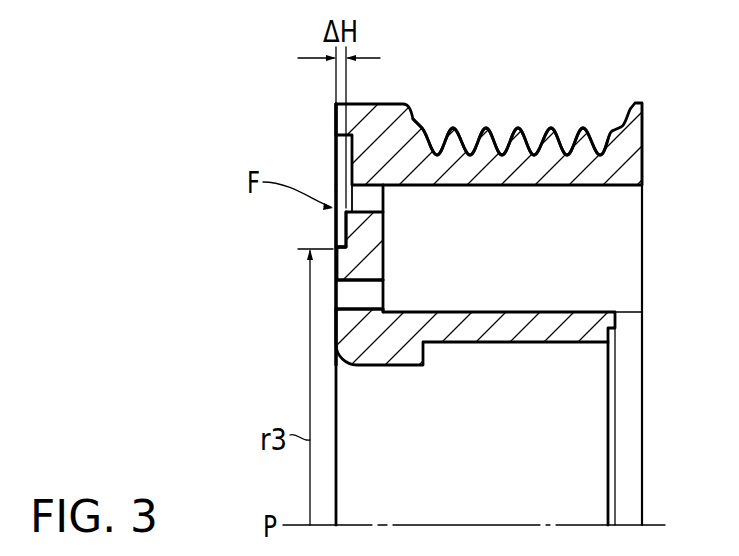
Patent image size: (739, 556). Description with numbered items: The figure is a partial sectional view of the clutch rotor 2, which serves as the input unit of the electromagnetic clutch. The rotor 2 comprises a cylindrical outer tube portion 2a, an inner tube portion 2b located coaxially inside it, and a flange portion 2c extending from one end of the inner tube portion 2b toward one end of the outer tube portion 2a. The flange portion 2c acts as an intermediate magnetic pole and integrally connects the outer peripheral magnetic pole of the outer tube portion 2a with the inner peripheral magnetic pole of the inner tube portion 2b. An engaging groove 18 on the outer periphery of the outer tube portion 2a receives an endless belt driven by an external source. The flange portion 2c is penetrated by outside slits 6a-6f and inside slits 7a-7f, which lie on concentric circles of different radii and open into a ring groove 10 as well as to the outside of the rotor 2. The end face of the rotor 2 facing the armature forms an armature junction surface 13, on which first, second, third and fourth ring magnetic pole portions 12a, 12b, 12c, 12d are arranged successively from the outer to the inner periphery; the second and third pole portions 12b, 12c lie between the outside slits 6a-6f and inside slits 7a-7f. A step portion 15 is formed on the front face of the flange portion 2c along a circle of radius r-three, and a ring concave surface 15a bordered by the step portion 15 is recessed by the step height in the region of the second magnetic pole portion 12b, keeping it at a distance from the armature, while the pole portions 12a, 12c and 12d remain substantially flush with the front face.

The clutch rotor 2 is at (318, 98).
The outer tube portion 2a is at (637, 162).
The inner tube portion 2b is at (613, 317).
The flange portion 2c is at (383, 229).
The outside slits 6a-6f is at (373, 195).
The inside slits 7a-7f is at (373, 288).
The ring groove 10 is at (620, 245).
The first magnetic pole portion 12a is at (333, 121).
The second magnetic pole portion 12b is at (340, 220).
The third magnetic pole portion 12c is at (340, 268).
The fourth magnetic pole portion 12d is at (340, 329).
The armature junction surface 13 is at (165, 140).
The step portion 15 is at (352, 247).
The ring concave surface 15a is at (340, 238).
The engaging groove 18 is at (563, 131).